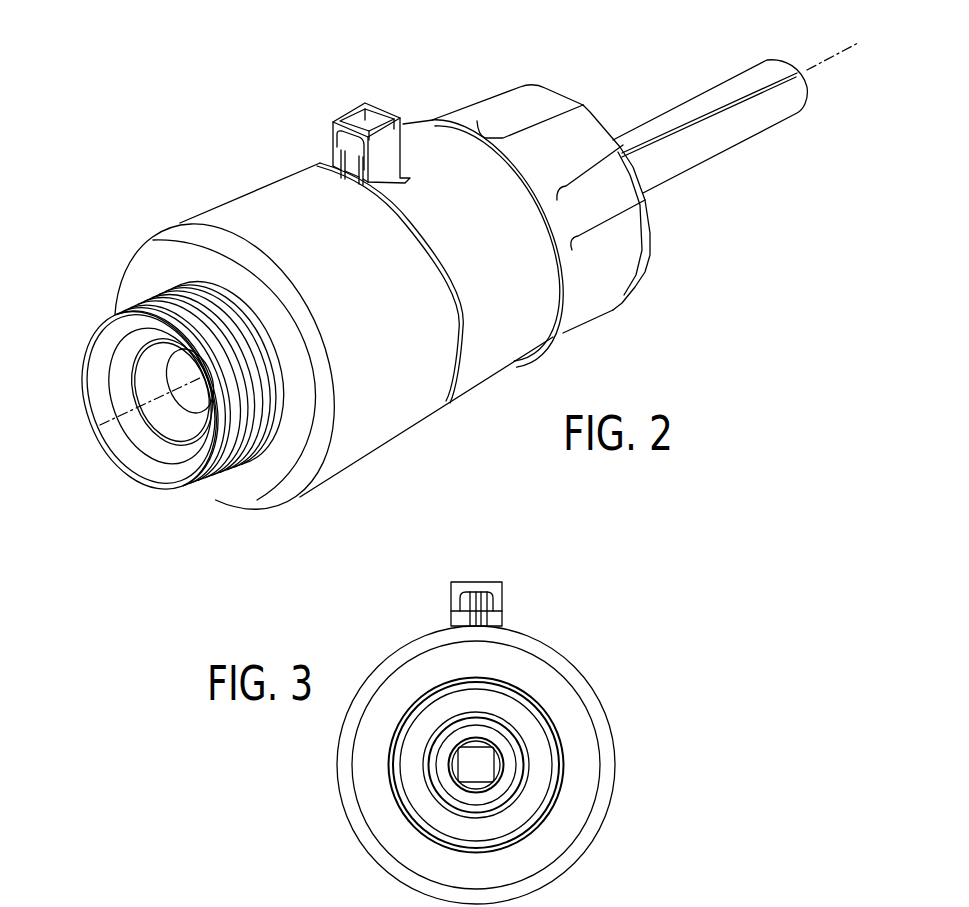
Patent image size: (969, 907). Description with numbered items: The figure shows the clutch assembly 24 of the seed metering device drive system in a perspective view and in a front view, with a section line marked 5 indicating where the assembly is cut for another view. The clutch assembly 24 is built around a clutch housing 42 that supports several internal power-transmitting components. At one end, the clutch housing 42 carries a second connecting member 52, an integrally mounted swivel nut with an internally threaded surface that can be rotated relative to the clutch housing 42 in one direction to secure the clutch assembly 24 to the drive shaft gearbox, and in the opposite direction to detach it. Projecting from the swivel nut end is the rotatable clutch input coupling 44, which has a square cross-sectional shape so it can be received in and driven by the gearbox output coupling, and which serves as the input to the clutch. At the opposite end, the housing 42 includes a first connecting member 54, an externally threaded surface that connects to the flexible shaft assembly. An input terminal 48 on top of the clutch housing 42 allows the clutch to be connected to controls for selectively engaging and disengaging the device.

In FIG. 2, the clutch assembly 24 is at (445, 289).
In FIG. 3, the clutch assembly 24 is at (525, 714).
In FIG. 2, the clutch housing 42 is at (470, 390).
In FIG. 3, the clutch housing 42 is at (614, 793).
In FIG. 2, the clutch input coupling 44 is at (718, 155).
In FIG. 2, the input terminal 48 is at (372, 104).
In FIG. 3, the input terminal 48 is at (503, 588).
In FIG. 2, the second connecting member 52 is at (620, 312).
In FIG. 2, the first connecting member 54 is at (228, 473).
In FIG. 3, the first connecting member 54 is at (537, 823).
In FIG. 2, the section line 5- 5 is at (100, 425).